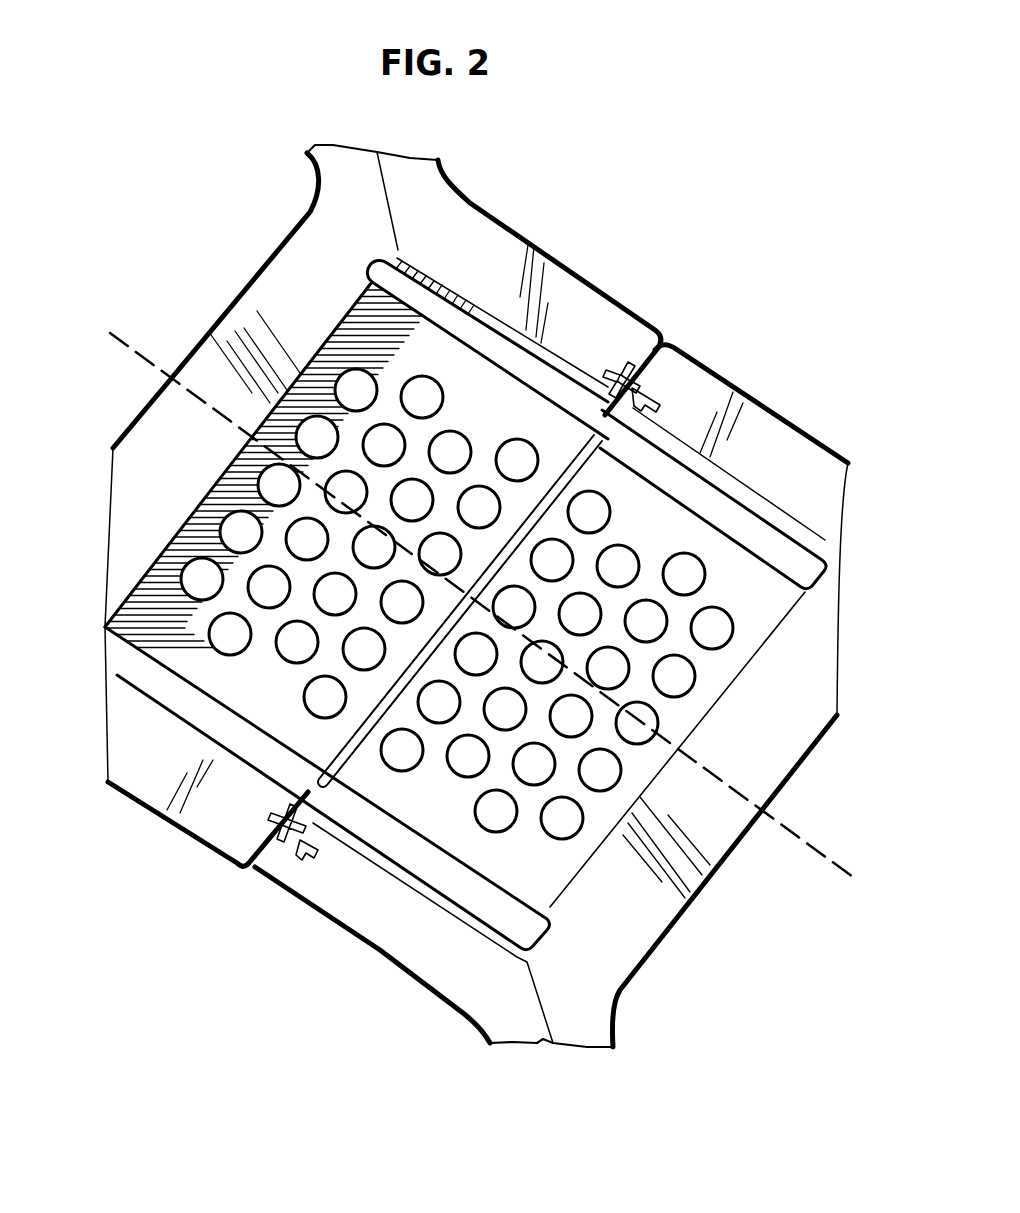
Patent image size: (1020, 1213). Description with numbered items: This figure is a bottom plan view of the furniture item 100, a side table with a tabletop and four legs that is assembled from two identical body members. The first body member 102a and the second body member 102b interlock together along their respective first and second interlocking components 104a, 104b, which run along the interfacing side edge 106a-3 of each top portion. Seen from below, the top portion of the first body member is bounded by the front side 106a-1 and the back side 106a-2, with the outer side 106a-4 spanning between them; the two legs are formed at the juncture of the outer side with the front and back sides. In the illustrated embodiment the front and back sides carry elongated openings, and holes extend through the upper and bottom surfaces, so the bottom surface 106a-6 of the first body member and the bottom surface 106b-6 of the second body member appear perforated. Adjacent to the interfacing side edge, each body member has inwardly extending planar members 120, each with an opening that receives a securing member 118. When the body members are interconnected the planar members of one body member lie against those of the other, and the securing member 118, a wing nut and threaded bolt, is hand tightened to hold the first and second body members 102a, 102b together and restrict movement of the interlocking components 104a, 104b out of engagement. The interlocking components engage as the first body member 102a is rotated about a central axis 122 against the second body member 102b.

The furniture item 100 is at (788, 332).
The first body member 102a is at (447, 223).
The second body member 102b is at (800, 443).
The first interlocking component 104a is at (385, 676).
The second interlocking component 104b is at (517, 553).
The front side 106a-1 is at (165, 728).
The back side 106a-2 is at (487, 307).
The interfacing side edge 106a-3 is at (258, 828).
The outer side 106a-4 is at (200, 492).
The bottom surface 106a-6 is at (433, 353).
The bottom surface 106b-6 is at (750, 603).
The securing member 118 is at (650, 393).
The planar member 120 is at (647, 357).
The central axis 122 is at (842, 866).